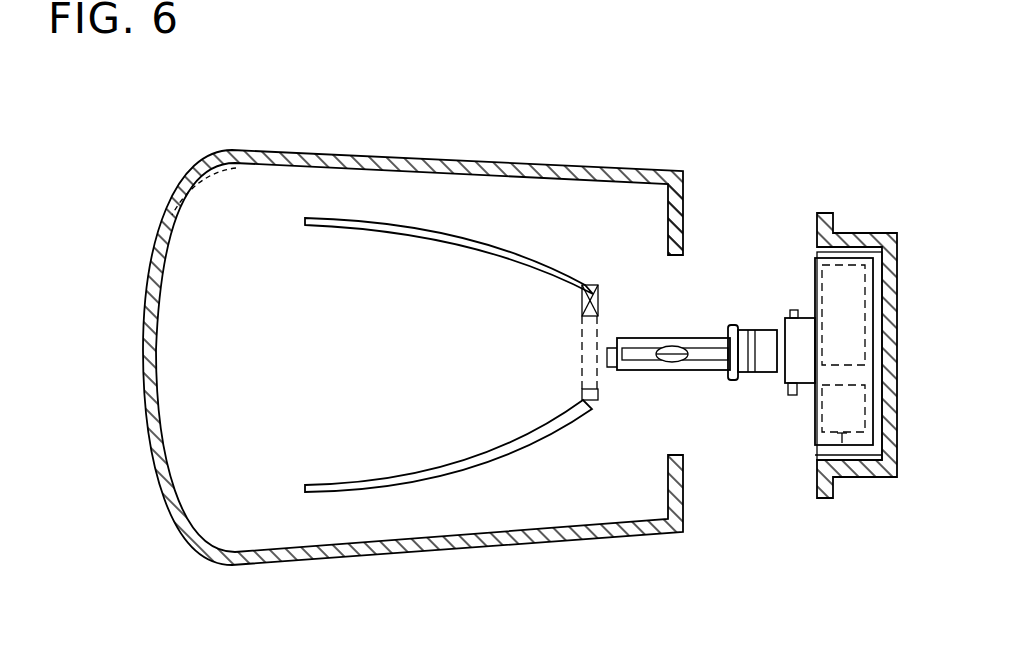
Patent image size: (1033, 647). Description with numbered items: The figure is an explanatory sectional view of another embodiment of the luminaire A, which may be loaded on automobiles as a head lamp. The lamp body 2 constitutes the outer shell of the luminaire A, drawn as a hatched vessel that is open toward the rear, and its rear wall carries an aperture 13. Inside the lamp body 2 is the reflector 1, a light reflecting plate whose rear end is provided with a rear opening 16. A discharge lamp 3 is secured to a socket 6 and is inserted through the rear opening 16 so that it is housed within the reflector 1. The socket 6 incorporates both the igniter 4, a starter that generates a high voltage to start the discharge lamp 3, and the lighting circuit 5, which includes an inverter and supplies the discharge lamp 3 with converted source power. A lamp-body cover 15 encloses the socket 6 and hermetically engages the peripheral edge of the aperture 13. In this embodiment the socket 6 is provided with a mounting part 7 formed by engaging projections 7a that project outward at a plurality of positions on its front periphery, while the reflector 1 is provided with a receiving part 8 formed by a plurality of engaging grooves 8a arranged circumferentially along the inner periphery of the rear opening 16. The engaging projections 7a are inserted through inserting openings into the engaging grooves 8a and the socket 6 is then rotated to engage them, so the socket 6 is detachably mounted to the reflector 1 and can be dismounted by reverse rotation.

The luminaire A is at (388, 150).
The reflector 1 is at (403, 222).
The lamp body 2 is at (513, 166).
The discharge lamp 3 is at (661, 340).
The igniter 4 is at (839, 446).
The lighting circuit 5 is at (813, 262).
The socket 6 is at (815, 446).
The mounting part 7 is at (790, 312).
The engaging projections 7a is at (788, 316).
The receiving part 8 is at (588, 285).
The engaging grooves 8a is at (597, 293).
The aperture 13 is at (677, 277).
The lamp-body cover 15 is at (873, 478).
The rear opening 16 is at (590, 358).